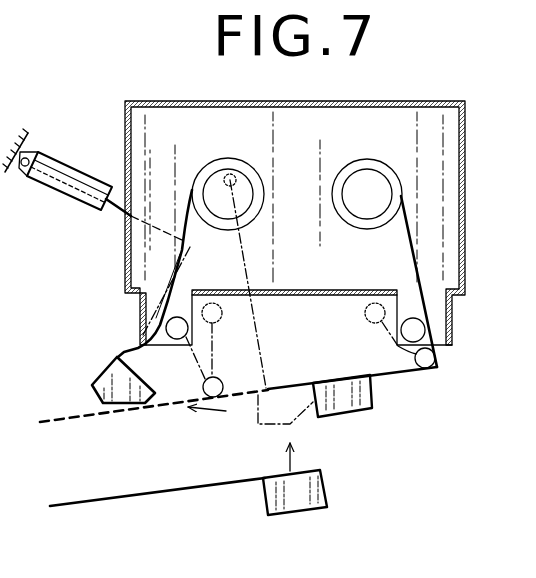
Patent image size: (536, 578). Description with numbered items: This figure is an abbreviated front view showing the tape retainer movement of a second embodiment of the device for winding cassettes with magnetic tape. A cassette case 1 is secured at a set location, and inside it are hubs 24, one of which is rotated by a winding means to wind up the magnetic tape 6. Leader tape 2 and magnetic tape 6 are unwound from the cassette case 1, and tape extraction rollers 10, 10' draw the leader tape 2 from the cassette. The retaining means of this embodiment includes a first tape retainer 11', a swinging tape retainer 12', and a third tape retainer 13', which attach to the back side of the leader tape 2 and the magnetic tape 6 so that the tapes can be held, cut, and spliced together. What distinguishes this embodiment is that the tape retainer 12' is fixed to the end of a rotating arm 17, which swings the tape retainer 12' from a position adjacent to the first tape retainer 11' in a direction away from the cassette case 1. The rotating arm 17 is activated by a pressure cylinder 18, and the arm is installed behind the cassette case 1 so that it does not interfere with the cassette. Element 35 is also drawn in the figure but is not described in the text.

The cassette case 1 is at (468, 147).
The leader tape 2 is at (170, 283).
The magnetic tape 6 is at (66, 424).
The tape extraction roller 10 is at (230, 326).
The tape extraction roller 10' is at (353, 350).
The first tape retainer 11' is at (357, 409).
The tape retainer 12' is at (206, 399).
The third tape retainer 13' is at (305, 511).
The rotating arm 17 is at (138, 336).
The pressure cylinder 18 is at (76, 198).
The hub 24 is at (386, 147).
The deflection roller 35 is at (424, 331).